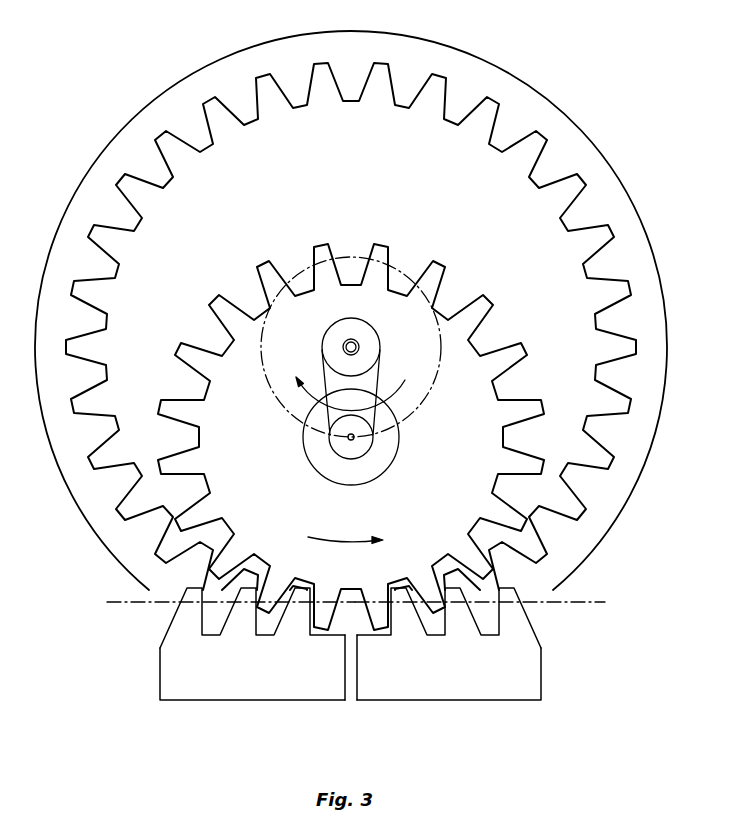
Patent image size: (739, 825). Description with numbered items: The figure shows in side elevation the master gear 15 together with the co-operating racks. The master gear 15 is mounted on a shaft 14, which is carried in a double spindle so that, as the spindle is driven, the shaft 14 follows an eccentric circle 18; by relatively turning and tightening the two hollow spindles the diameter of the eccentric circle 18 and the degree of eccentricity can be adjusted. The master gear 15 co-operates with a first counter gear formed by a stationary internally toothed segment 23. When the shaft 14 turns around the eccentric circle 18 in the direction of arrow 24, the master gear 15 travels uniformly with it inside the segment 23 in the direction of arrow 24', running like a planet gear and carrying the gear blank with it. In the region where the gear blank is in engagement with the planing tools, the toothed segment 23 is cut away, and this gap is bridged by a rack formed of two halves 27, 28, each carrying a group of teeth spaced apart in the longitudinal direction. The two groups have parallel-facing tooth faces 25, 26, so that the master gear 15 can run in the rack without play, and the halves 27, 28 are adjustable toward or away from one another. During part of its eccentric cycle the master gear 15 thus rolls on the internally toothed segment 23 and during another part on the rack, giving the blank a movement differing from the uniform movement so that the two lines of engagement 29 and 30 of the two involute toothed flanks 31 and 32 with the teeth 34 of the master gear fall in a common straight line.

The shaft 14 is at (345, 445).
The master gear 15 is at (213, 417).
The eccentric circle 18 is at (258, 342).
The internally toothed segment 23 is at (77, 222).
The arrow 24 is at (356, 376).
The arrow 24' is at (365, 517).
The tooth face 25 is at (255, 622).
The tooth face 26 is at (448, 622).
The rack half 27 is at (182, 657).
The rack half 28 is at (510, 655).
The line of engagement 29 is at (130, 601).
The line of engagement 30 is at (570, 602).
The involute toothed flank 31 is at (314, 636).
The involute toothed flank 32 is at (390, 636).
The teeth of the master gear 34 is at (230, 315).